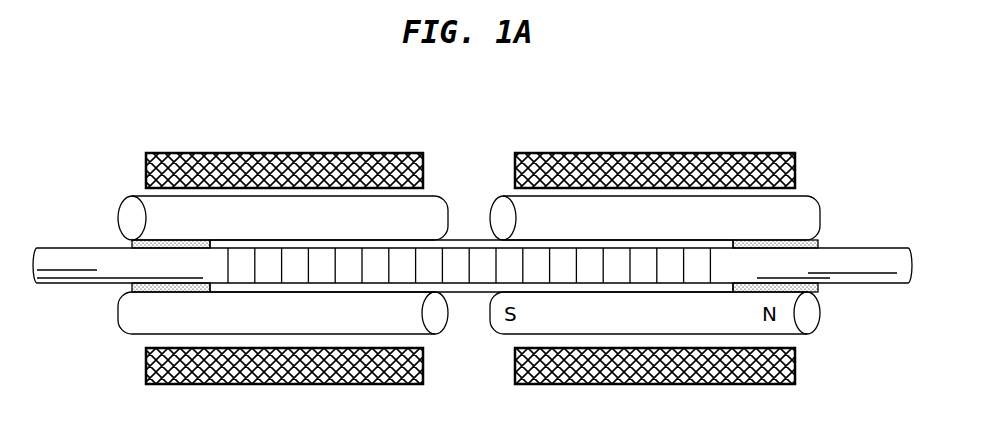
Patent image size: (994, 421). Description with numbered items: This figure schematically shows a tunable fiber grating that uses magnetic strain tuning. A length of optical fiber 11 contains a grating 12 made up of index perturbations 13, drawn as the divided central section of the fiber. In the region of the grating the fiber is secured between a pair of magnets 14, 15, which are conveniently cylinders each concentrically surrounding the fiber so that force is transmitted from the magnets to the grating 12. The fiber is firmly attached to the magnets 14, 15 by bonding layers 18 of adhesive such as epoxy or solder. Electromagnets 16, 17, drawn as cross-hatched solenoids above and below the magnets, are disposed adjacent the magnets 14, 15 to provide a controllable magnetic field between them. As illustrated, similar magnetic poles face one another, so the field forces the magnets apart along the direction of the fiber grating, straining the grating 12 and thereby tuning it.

The optical fiber 11 is at (870, 248).
The grating 12 is at (458, 255).
The index perturbations 13 is at (478, 284).
The magnet 14 is at (120, 226).
The magnet 15 is at (818, 212).
The electromagnet 16 is at (254, 153).
The electromagnet 17 is at (733, 153).
The bonding layers 18 is at (118, 290).